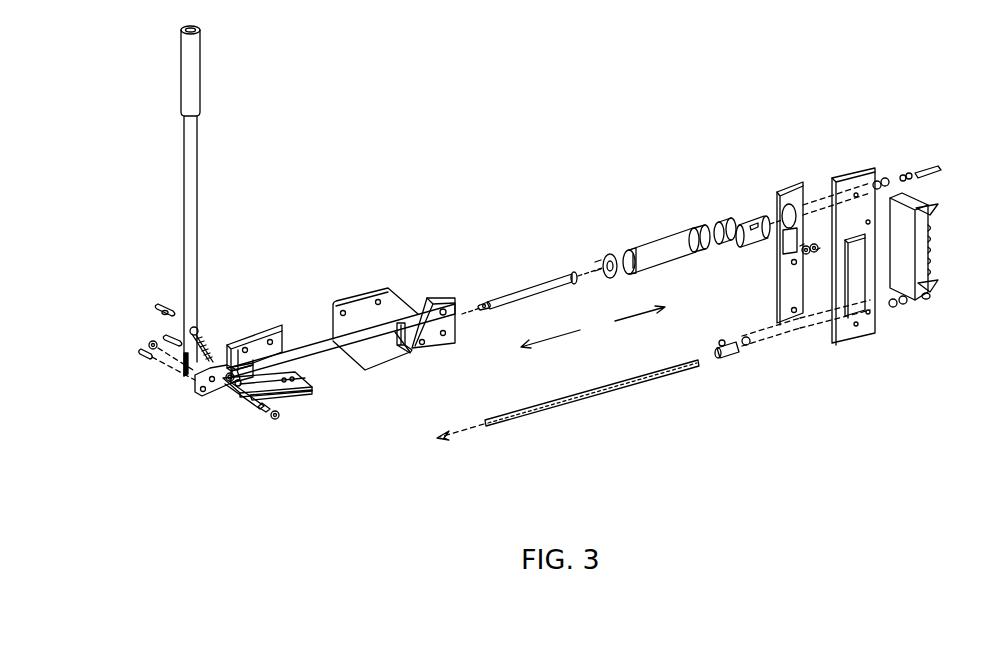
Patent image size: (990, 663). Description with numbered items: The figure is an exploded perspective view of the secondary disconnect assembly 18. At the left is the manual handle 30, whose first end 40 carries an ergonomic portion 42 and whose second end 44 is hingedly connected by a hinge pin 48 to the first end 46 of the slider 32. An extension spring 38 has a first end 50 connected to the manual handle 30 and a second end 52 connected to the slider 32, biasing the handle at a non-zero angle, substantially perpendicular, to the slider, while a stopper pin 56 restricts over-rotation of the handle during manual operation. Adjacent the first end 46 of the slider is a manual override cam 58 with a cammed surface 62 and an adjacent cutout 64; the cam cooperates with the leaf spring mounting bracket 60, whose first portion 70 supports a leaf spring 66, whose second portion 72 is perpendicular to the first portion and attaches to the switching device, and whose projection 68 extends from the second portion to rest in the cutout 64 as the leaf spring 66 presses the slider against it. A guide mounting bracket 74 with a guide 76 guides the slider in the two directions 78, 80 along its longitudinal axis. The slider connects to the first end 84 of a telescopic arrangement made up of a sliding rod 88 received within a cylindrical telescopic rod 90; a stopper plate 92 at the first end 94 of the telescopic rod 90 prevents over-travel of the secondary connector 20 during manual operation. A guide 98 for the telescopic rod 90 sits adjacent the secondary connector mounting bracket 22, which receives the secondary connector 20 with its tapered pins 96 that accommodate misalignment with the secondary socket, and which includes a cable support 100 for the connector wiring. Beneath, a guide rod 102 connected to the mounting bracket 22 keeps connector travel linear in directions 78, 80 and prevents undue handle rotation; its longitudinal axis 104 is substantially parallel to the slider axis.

The secondary disconnect assembly 18 is at (481, 486).
The secondary connector 20 is at (922, 282).
The secondary connector mounting bracket 22 is at (836, 172).
The manual handle 30 is at (197, 147).
The slider 32 is at (333, 302).
The extension spring 38 is at (206, 335).
The first end 40 is at (185, 31).
The ergonomic portion 42 is at (195, 86).
The second end 44 is at (190, 372).
The first end 46 is at (212, 388).
The hinge pin 48 is at (265, 406).
The first end 50 is at (192, 330).
The second end 52 is at (213, 352).
The stopper pin 56 is at (140, 356).
The manual override cam 58 is at (237, 386).
The leaf spring mounting bracket 60 is at (282, 415).
The cammed surface 62 is at (228, 380).
The cutout 64 is at (238, 387).
The leaf spring 66 is at (300, 379).
The projection 68 is at (245, 355).
The first portion 70 is at (308, 394).
The second portion 72 is at (280, 340).
The guide mounting bracket 74 is at (452, 345).
The guide 76 is at (402, 354).
The direction 78 is at (640, 322).
The direction 80 is at (553, 342).
The first end 84 is at (484, 303).
The sliding rod 88 is at (530, 295).
The cylindrical telescopic rod 90 is at (678, 236).
The stopper plate 92 is at (606, 256).
The first end 94 is at (628, 250).
The tapered pins 96 is at (942, 208).
The guide 98 is at (775, 200).
The cable support 100 is at (822, 252).
The guide rod 102 is at (552, 410).
The longitudinal axis 104 is at (716, 364).